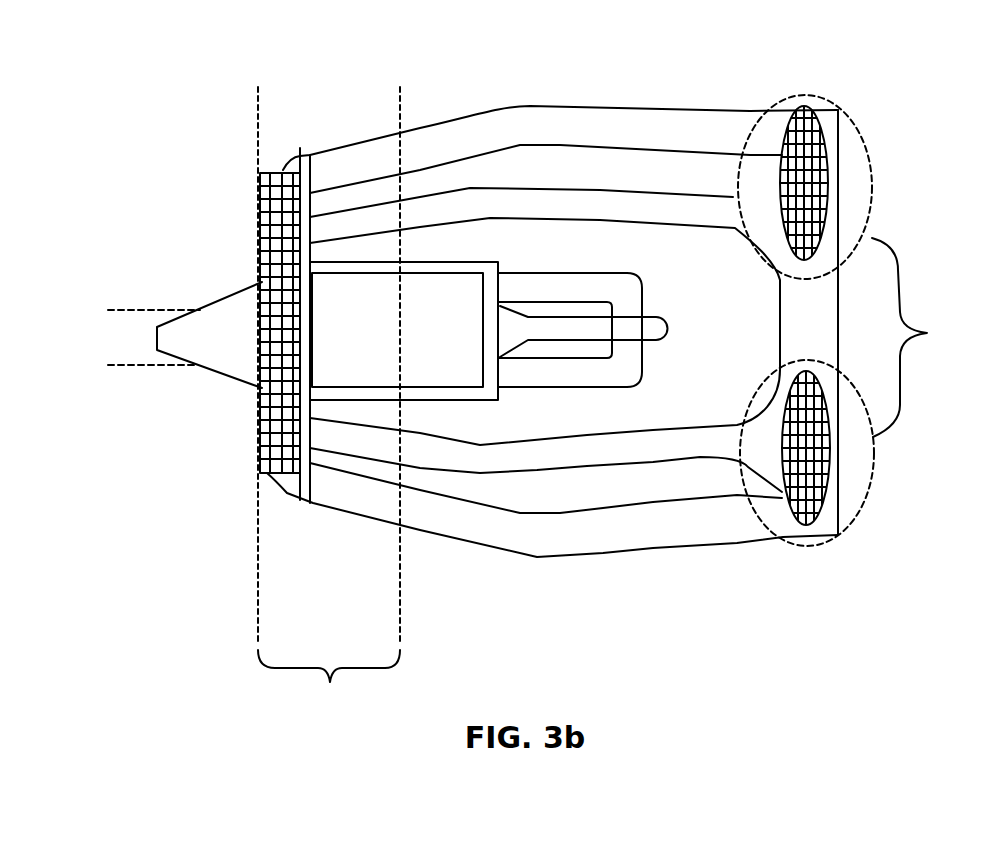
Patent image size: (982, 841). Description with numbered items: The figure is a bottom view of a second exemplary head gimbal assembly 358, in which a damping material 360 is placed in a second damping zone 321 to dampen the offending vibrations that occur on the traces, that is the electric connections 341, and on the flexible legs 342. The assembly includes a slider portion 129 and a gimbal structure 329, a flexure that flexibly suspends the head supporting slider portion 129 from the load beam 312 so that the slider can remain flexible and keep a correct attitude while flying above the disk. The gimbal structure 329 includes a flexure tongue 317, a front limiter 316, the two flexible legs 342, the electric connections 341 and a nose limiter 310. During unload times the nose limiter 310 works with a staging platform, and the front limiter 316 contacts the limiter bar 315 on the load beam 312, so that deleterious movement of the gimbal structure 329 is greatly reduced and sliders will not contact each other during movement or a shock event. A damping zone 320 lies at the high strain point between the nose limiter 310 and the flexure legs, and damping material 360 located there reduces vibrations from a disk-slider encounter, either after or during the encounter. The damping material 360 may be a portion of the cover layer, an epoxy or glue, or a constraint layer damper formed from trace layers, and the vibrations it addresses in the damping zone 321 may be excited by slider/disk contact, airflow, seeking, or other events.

The head gimbal assembly 358 is at (390, 30).
The electric connections 341 is at (752, 137).
The flexible legs 342 is at (572, 203).
The gimbal structure 329 is at (800, 318).
The damping zone 321 is at (917, 337).
The damping zone 320 is at (329, 399).
The damping material 360 is at (258, 188).
The nose limiter 310 is at (227, 320).
The load beam 312 is at (128, 340).
The flexure tongue 317 is at (468, 390).
The slider portion 129 is at (435, 313).
The front limiter 316 is at (577, 290).
The limiter bar 315 is at (650, 328).